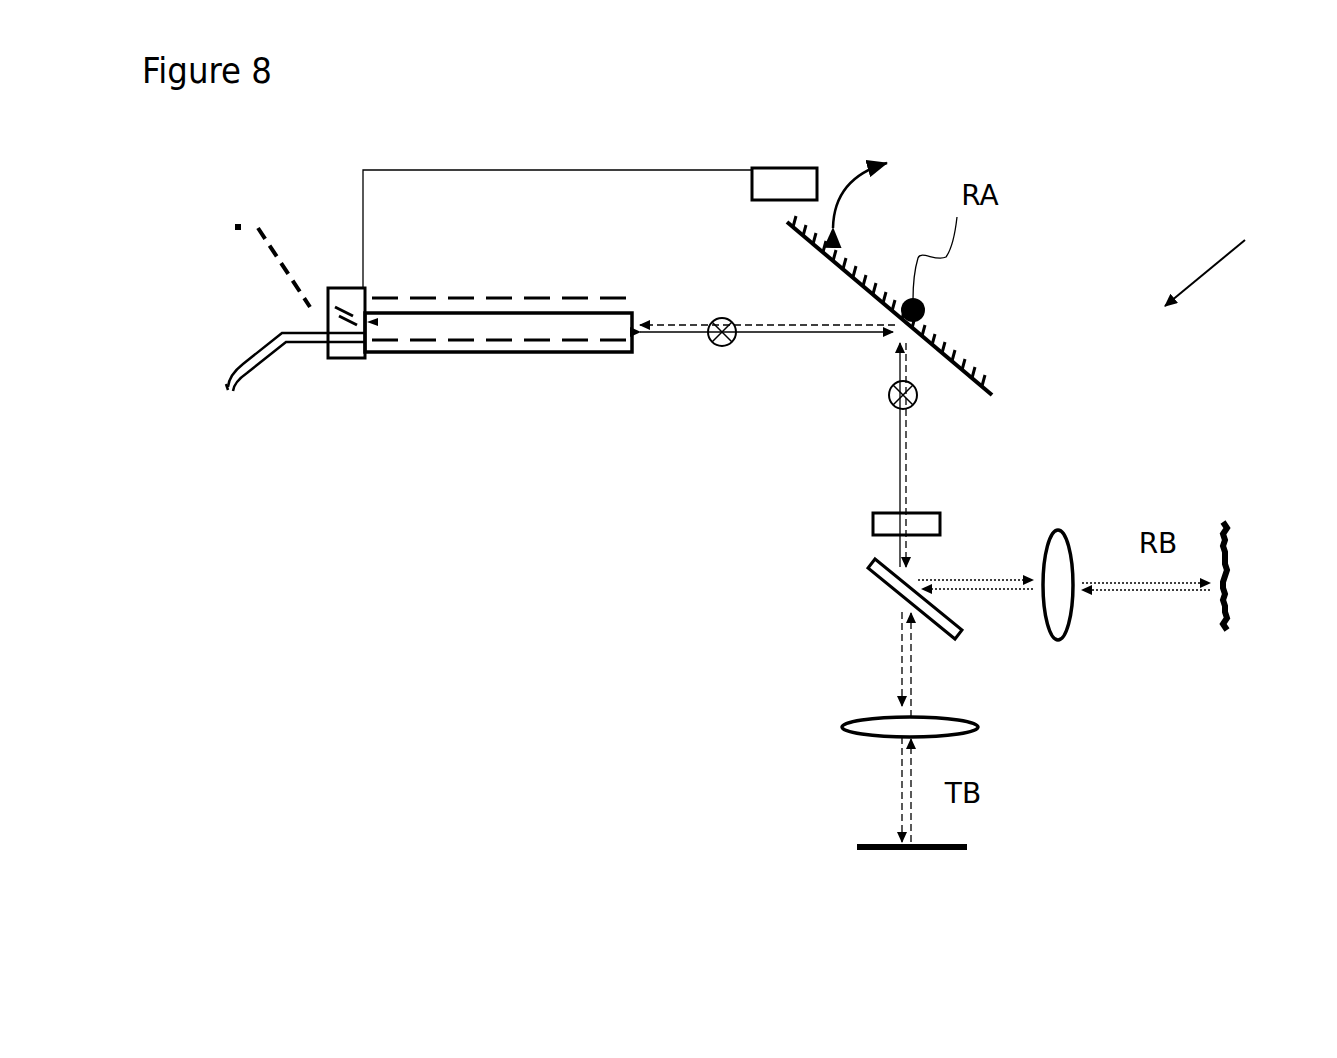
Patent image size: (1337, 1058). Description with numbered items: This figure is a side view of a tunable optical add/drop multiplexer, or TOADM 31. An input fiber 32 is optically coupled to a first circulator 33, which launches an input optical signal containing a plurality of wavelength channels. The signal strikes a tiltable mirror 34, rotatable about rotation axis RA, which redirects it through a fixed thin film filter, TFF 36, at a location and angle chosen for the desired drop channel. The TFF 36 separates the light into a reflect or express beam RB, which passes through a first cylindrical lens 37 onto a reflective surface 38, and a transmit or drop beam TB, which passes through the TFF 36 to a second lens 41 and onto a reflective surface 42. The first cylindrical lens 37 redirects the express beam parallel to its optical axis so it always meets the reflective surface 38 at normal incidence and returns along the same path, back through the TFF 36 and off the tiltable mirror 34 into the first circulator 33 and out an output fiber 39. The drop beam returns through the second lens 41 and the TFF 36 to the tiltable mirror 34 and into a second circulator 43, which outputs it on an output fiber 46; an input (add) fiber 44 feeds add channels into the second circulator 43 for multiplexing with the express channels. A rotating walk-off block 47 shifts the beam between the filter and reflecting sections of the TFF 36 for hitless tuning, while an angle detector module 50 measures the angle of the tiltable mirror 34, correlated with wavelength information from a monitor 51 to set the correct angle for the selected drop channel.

The TOADM 31 is at (1226, 256).
The input fiber 32 is at (227, 391).
The first circulator 33 is at (405, 353).
The tiltable mirror 34 is at (960, 353).
The TFF 36 is at (958, 624).
The first cylindrical lens 37 is at (1053, 533).
The reflective surface 38 is at (1226, 522).
The output fiber 39 is at (253, 337).
The second lens 41 is at (852, 733).
The reflective surface 42 is at (967, 849).
The second circulator 43 is at (613, 297).
The input (add) fiber 44 is at (243, 237).
The output fiber 46 is at (258, 228).
The rotating walk-off block 47 is at (873, 514).
The angle detector module 50 is at (772, 186).
The monitor 51 is at (368, 284).